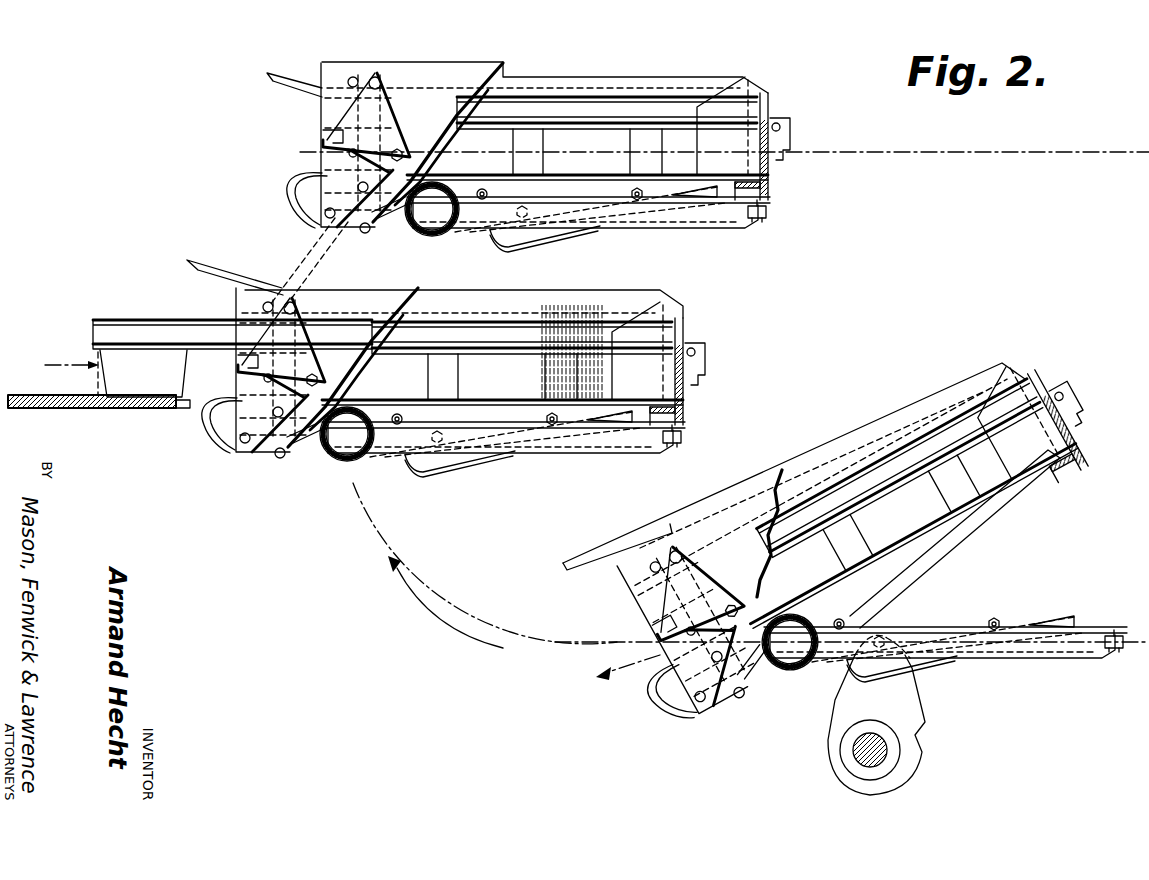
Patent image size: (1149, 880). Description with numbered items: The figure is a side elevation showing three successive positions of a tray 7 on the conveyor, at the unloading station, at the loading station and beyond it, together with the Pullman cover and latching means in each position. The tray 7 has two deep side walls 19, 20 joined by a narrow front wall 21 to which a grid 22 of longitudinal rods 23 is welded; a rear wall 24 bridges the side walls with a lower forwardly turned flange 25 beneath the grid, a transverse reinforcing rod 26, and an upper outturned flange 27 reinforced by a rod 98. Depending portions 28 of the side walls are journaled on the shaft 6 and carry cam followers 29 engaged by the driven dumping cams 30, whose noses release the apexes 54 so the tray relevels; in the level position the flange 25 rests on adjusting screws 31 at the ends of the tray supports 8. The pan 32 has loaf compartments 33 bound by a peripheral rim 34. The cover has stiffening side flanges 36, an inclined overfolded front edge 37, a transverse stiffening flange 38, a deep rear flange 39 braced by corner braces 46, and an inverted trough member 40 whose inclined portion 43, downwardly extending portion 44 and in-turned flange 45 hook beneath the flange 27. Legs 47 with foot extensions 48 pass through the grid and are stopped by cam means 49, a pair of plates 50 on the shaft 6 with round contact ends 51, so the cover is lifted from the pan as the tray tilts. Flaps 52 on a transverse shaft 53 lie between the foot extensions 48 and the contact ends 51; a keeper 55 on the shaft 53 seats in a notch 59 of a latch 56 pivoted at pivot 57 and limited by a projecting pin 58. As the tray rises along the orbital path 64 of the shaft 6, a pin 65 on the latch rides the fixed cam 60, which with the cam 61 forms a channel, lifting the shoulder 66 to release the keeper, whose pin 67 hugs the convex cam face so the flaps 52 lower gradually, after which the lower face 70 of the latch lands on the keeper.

The shaft 6 is at (440, 238).
The tray 7 is at (612, 386).
The tray supports 8 is at (724, 230).
The side wall 19 is at (640, 125).
The side wall 20 is at (476, 68).
The front wall 21 is at (222, 445).
The grid 22 is at (1040, 470).
The rods 23 is at (392, 405).
The rear wall 24 is at (712, 382).
The lower forwardly turned flange 25 is at (735, 182).
The transverse reinforcing rod 26 is at (770, 173).
The outturned flange 27 is at (790, 118).
The depending portions 28 is at (488, 231).
The cam followers 29 is at (596, 233).
The dumping cams 30 is at (910, 684).
The adjusting screws 31 is at (768, 213).
The pan 32 is at (598, 113).
The loaf compartments 33 is at (548, 150).
The peripheral rim 34 is at (556, 100).
The stiffening side flanges 36 is at (650, 77).
The front edge 37 is at (270, 70).
The stiffening flange 38 is at (305, 78).
The deep flange 39 is at (757, 139).
The inverted trough member 40 is at (785, 115).
The inclined portion 43 is at (795, 129).
The downwardly extending portion 44 is at (800, 139).
The in-turned flange 45 is at (787, 152).
The corner braces 46 is at (732, 77).
The legs 47 is at (360, 150).
The foot extensions 48 is at (360, 188).
The cam means 49 is at (383, 228).
The plates 50 is at (380, 210).
The contact ends 51 is at (365, 232).
The flaps 52 is at (290, 401).
The transverse shaft 53 is at (325, 216).
The apexes 54 is at (512, 243).
The keeper 55 is at (357, 161).
The latch 56 is at (398, 131).
The pivot 57 is at (420, 159).
The projecting pin 58 is at (355, 78).
The notch 59 is at (323, 134).
The fixed cam 60 is at (320, 251).
The cam 61 is at (298, 239).
The orbital path 64 is at (395, 263).
The pin 65 is at (377, 78).
The shoulder 66 is at (330, 153).
The projecting pin 67 is at (325, 169).
The lower face 70 is at (353, 150).
The rod 98 is at (782, 115).